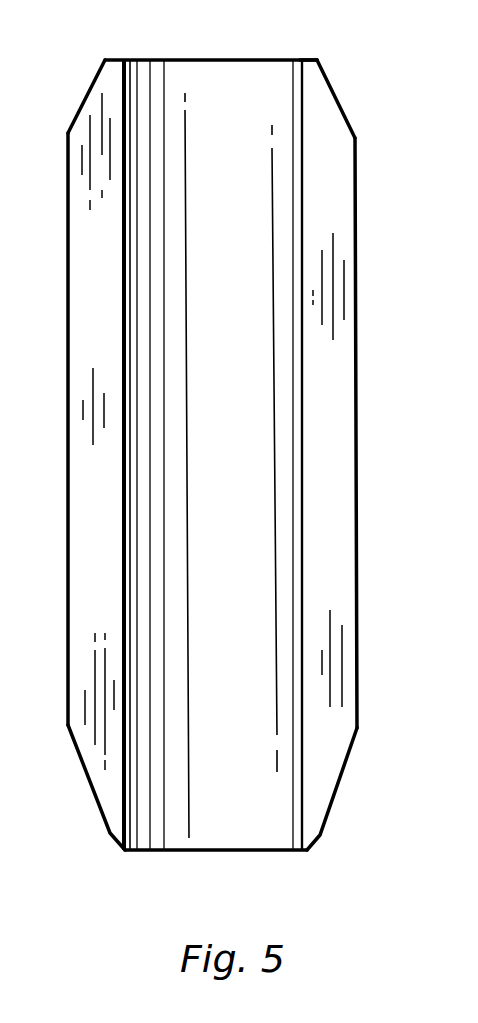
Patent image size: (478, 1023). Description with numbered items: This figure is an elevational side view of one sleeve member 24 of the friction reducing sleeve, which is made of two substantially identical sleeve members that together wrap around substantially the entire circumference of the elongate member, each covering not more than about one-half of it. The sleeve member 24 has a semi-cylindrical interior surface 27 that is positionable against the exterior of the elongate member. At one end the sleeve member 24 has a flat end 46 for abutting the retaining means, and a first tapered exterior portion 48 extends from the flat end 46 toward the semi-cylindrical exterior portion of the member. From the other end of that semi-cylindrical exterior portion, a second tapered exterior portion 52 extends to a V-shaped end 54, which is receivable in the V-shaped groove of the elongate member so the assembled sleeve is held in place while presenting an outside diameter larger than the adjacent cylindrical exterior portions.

The sleeve member 24 is at (357, 290).
The semi-cylindrical interior surface 27 is at (245, 453).
The flat end 46 is at (310, 57).
The first tapered exterior portion 48 is at (342, 105).
The second tapered exterior portion 52 is at (343, 778).
The V-shaped end 54 is at (307, 848).